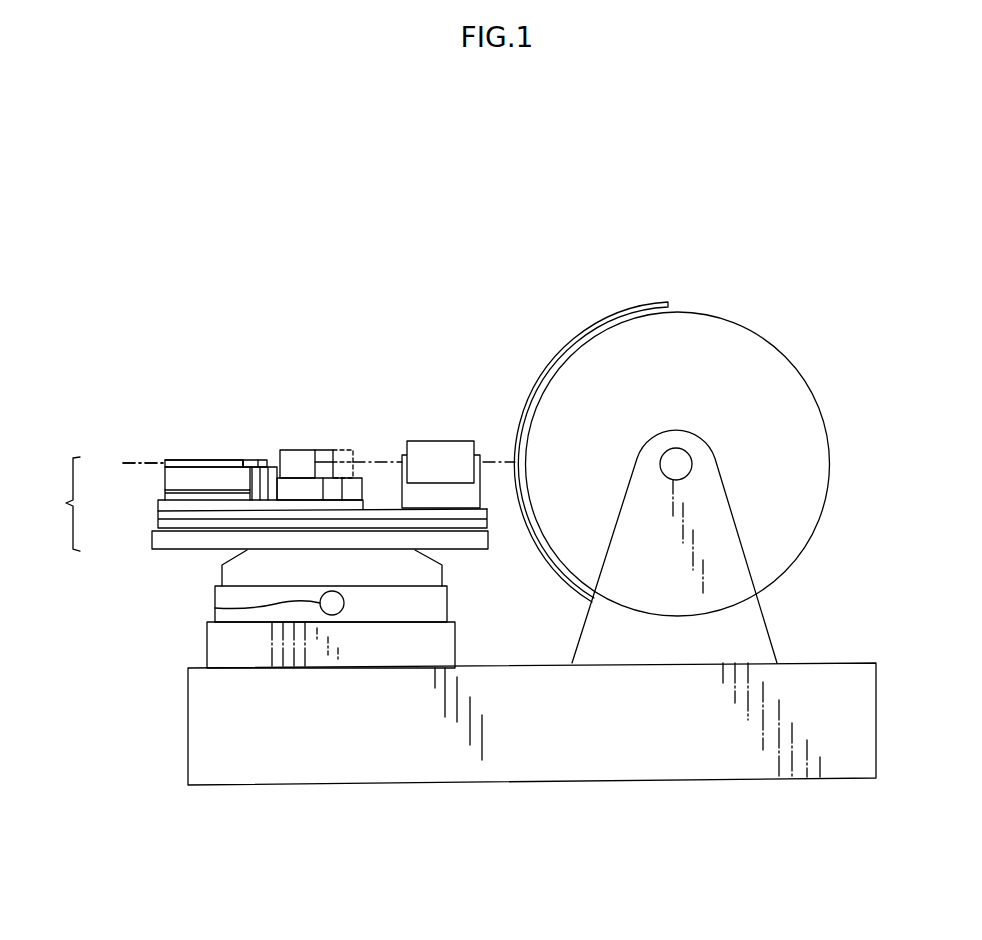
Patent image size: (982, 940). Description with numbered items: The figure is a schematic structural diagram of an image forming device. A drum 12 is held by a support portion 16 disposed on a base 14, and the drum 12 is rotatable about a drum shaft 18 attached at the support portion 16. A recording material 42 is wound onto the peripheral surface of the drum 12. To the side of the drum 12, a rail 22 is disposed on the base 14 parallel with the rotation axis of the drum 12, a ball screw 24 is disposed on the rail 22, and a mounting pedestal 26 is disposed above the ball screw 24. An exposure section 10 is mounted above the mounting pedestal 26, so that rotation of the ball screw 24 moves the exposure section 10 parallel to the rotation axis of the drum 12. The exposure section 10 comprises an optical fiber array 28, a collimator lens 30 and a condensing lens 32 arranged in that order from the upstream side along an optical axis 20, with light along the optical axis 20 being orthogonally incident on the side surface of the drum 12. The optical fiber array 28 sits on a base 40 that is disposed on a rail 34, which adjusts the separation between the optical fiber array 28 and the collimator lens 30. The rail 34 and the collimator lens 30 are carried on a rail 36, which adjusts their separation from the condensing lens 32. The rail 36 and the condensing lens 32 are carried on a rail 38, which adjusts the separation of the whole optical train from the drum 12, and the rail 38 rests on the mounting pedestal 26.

The exposure section 10 is at (51, 504).
The drum 12 is at (760, 332).
The base 14 is at (188, 720).
The support portion 16 is at (767, 623).
The drum shaft 18 is at (682, 460).
The optical axis 20 is at (152, 462).
The rail 22 is at (207, 642).
The ball screw 24 is at (215, 607).
The mounting pedestal 26 is at (218, 573).
The optical fiber array 28 is at (222, 462).
The collimator lens 30 is at (300, 452).
The condensing lens 32 is at (432, 441).
The rail 34 is at (162, 495).
The rail 36 is at (159, 515).
The rail 38 is at (153, 543).
The base 40 is at (170, 477).
The recording material 42 is at (595, 323).